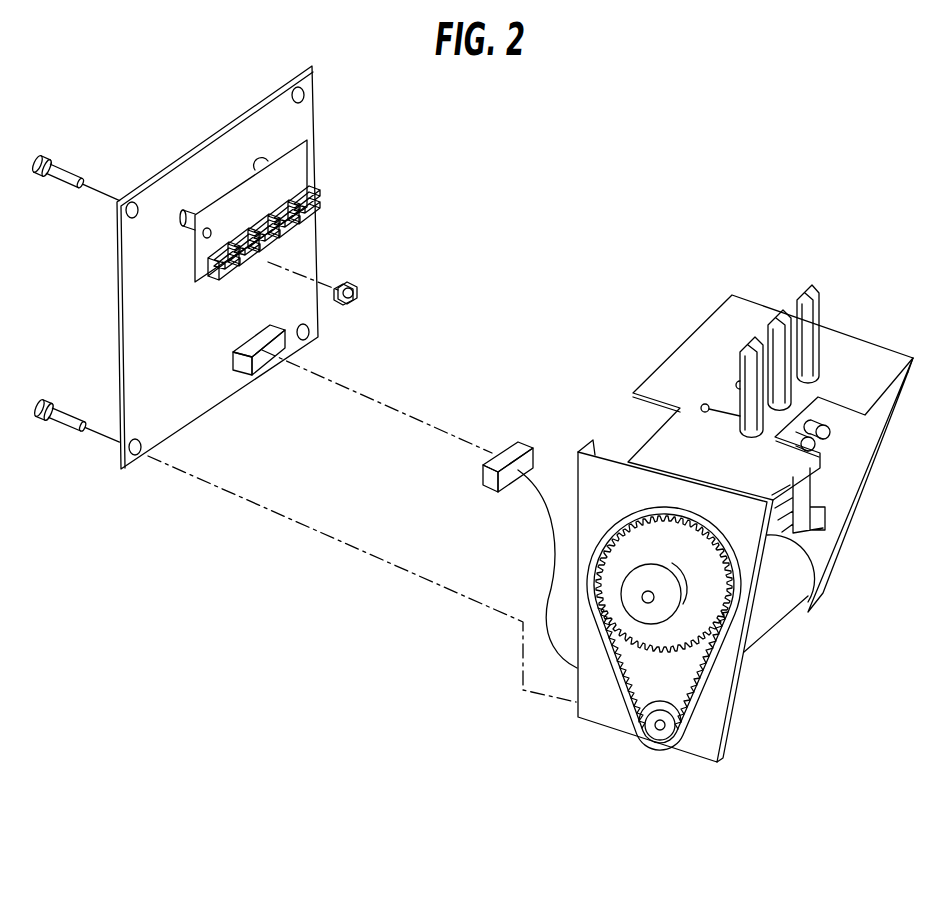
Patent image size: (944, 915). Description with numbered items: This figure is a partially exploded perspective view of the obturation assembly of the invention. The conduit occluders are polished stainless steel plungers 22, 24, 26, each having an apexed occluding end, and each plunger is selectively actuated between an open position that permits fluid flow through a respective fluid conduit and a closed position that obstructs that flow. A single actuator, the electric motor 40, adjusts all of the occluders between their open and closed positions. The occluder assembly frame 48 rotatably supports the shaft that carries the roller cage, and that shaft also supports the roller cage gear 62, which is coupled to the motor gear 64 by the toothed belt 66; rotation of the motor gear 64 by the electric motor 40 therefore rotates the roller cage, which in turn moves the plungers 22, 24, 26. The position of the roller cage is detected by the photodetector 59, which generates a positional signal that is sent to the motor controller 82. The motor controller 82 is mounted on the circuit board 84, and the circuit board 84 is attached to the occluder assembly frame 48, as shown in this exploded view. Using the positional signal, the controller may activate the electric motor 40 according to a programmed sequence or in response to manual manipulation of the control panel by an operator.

The plunger 22 is at (745, 345).
The plunger 24 is at (780, 312).
The plunger 26 is at (807, 292).
The electric motor 40 is at (787, 593).
The occluder assembly frame 48 is at (665, 448).
The photodetector 59 is at (283, 215).
The roller cage gear 62 is at (698, 623).
The motor gear 64 is at (655, 735).
The toothed belt 66 is at (703, 700).
The motor controller 82 is at (485, 478).
The circuit board 84 is at (298, 254).